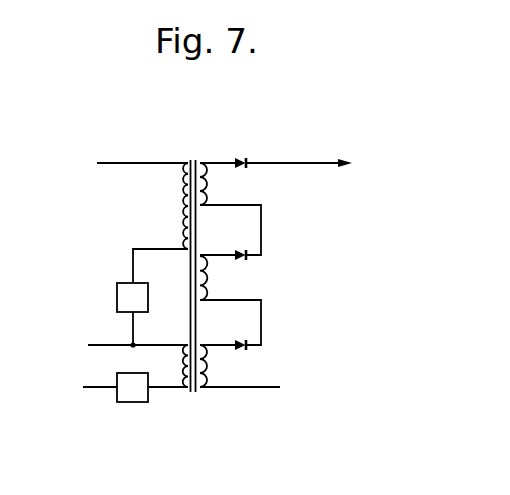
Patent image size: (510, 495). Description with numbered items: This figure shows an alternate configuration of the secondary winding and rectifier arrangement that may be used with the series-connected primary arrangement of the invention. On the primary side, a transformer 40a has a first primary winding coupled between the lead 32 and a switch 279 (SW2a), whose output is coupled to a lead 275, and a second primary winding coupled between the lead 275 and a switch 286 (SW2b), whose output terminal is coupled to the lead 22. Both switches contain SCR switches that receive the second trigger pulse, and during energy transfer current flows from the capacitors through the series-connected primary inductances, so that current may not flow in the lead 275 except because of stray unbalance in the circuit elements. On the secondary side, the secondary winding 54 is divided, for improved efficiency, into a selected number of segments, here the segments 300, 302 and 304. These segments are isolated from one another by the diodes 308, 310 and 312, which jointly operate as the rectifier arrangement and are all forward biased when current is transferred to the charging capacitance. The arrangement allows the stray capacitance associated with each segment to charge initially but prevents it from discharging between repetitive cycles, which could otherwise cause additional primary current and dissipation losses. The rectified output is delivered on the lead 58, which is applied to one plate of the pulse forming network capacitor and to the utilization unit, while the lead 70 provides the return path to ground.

The transformer 40a is at (195, 157).
The lead 32 is at (118, 164).
The switch 279 is at (120, 289).
The lead 275 is at (102, 345).
The lead 22 is at (104, 388).
The switch 286 is at (141, 401).
The segment 300 is at (210, 198).
The segment 302 is at (210, 290).
The segment 304 is at (210, 378).
The diode 308 is at (238, 157).
The diode 310 is at (243, 235).
The diode 312 is at (241, 320).
The lead 58 is at (300, 163).
The secondary winding 54 is at (275, 262).
The lead 70 is at (246, 388).